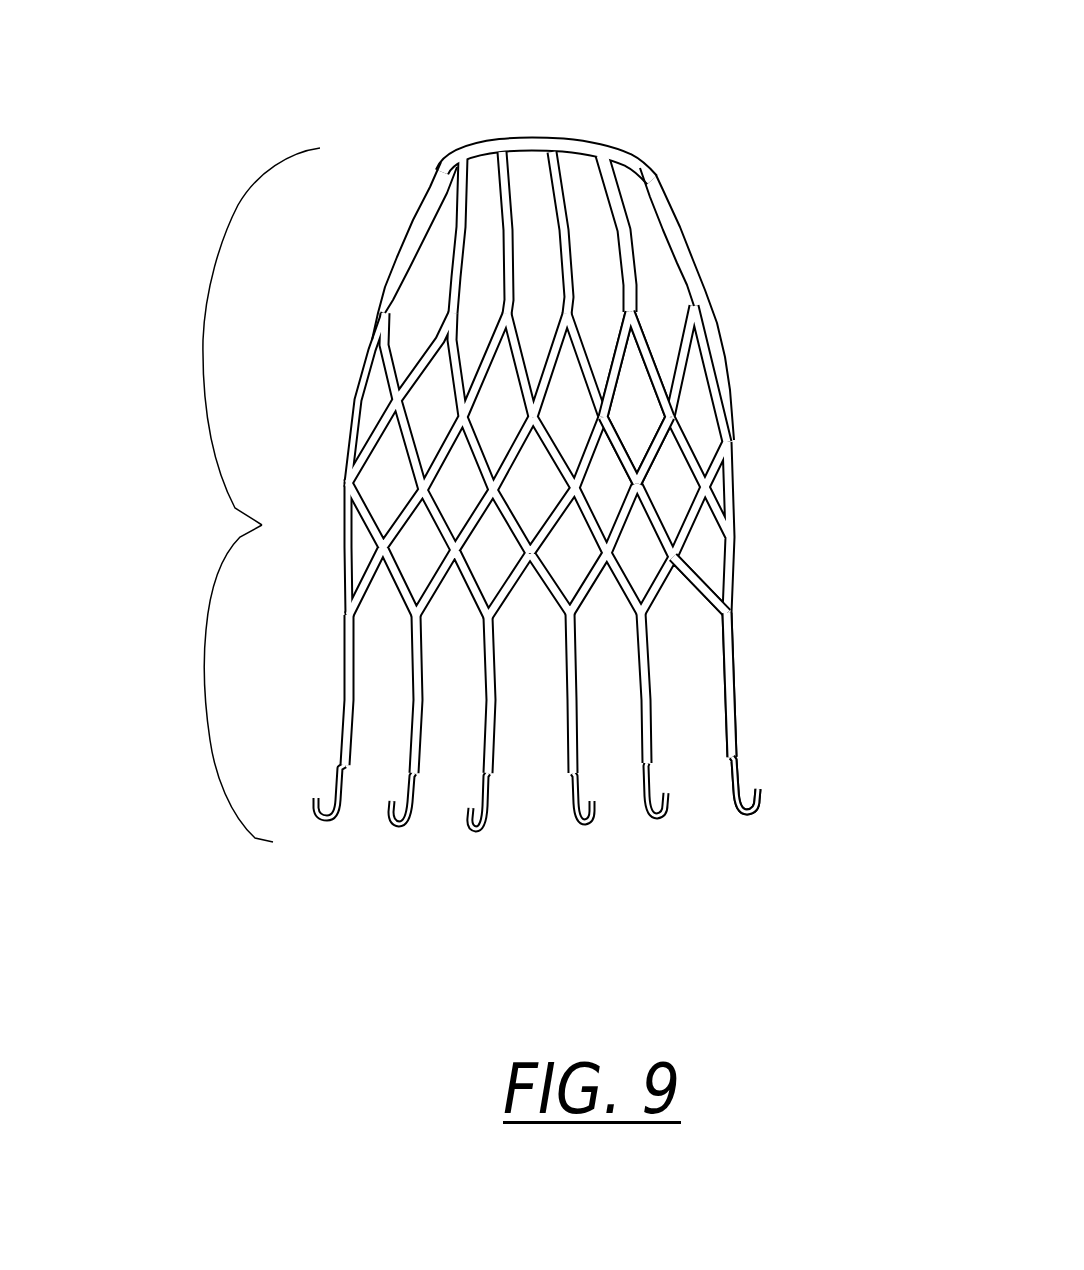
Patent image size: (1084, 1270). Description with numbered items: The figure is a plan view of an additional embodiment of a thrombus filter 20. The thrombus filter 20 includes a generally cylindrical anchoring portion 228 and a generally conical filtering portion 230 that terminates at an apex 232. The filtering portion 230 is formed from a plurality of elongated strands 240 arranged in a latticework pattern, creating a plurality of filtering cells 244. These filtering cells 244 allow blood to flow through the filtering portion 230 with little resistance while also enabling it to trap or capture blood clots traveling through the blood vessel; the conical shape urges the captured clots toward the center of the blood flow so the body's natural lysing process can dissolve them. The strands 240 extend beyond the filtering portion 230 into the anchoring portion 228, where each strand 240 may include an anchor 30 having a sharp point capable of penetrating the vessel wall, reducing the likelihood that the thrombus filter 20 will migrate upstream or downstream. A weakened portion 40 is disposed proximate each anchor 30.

The thrombus filter 20 is at (504, 498).
The apex 232 is at (504, 461).
The filtering portion 230 is at (203, 322).
The anchoring portion 228 is at (205, 680).
The filtering cells 244 is at (630, 413).
The elongated strands 240 is at (694, 580).
The weakened portion 40 is at (836, 768).
The anchor 30 is at (771, 847).